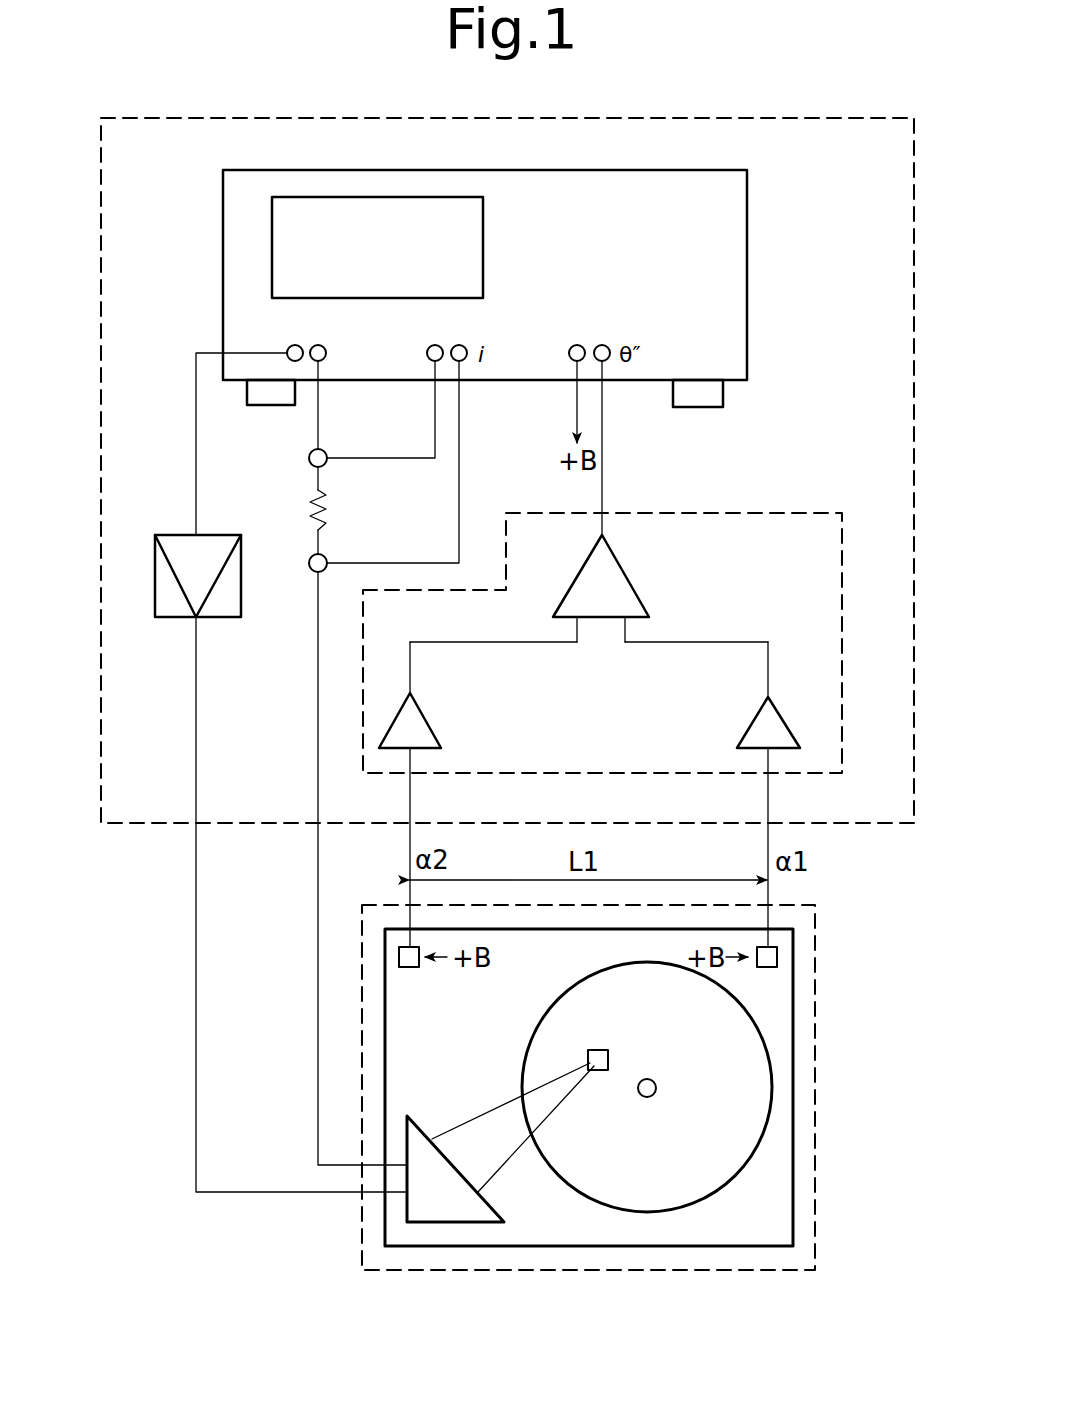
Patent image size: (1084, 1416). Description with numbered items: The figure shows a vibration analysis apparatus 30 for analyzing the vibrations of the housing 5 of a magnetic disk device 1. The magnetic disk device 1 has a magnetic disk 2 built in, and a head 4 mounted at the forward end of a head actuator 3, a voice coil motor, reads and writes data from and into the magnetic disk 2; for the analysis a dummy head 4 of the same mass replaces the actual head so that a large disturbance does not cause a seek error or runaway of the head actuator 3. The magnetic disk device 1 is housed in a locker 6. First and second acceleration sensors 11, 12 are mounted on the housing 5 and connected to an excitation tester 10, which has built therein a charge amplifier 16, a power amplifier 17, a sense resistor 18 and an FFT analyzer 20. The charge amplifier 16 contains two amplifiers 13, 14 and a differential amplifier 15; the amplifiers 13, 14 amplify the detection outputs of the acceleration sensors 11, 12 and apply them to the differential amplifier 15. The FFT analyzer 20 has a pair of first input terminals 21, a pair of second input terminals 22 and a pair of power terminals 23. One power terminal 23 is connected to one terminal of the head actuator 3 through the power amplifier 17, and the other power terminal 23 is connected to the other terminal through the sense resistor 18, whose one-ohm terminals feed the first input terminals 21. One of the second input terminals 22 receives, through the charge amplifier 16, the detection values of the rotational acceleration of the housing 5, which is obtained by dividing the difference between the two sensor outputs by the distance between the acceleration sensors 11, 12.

The magnetic disk device 1 is at (795, 1012).
The magnetic disk 2 is at (755, 1101).
The head actuator 3 is at (480, 1222).
The head 4 is at (601, 1072).
The housing 5 is at (794, 1165).
The locker 6 is at (816, 1225).
The excitation tester 10 is at (916, 150).
The first acceleration sensor 11 is at (767, 968).
The second acceleration sensor 12 is at (409, 968).
The amplifier 13 is at (782, 724).
The amplifier 14 is at (423, 722).
The differential amplifier 15 is at (631, 575).
The charge amplifier 16 is at (790, 512).
The power amplifier 17 is at (172, 535).
The sense resistor 18 is at (333, 508).
The FFT analyzer 20 is at (749, 186).
The first input terminals 21 is at (463, 346).
The second input terminals 22 is at (606, 346).
The power terminals 23 is at (327, 353).
The vibration analysis apparatus 30 is at (180, 946).